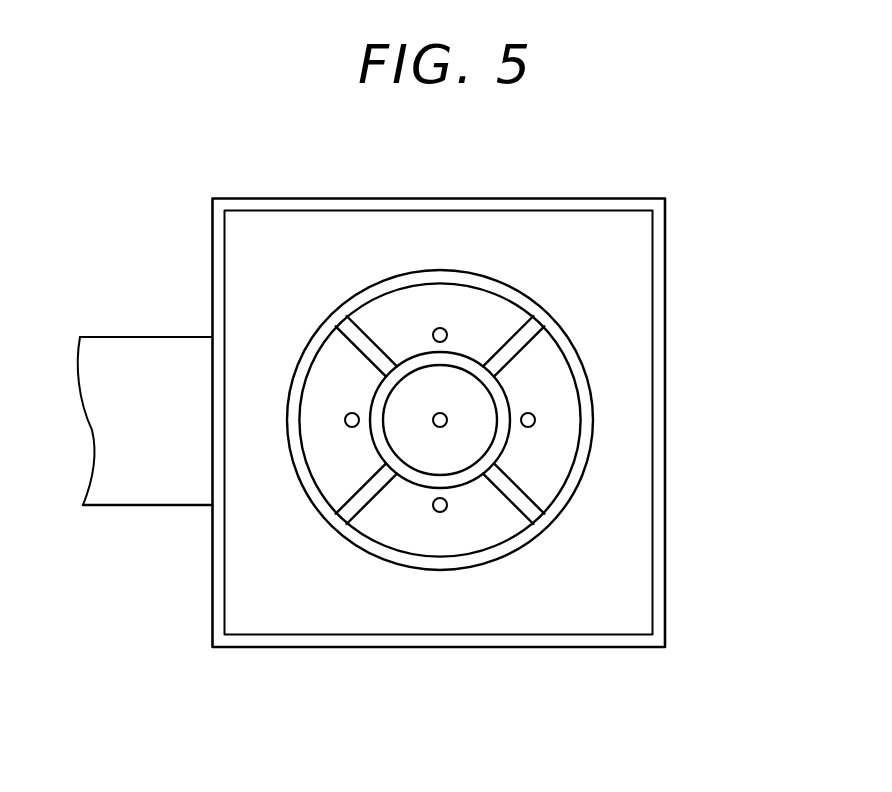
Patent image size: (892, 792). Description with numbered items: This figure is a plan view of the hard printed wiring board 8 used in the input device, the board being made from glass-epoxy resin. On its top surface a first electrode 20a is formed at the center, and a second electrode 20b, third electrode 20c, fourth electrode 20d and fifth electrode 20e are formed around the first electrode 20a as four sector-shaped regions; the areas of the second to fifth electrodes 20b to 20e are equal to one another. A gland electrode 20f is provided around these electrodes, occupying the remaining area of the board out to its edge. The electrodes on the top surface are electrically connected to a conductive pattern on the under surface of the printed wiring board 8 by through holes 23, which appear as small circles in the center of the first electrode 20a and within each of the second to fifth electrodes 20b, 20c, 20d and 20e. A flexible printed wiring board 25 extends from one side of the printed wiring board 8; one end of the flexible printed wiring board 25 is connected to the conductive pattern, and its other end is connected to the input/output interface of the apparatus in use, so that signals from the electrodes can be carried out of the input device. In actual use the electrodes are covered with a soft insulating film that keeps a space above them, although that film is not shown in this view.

The printed wiring board 8 is at (668, 250).
The first electrode 20a is at (423, 460).
The second electrode 20b is at (422, 293).
The third electrode 20c is at (330, 467).
The fourth electrode 20d is at (488, 537).
The fifth electrode 20e is at (565, 410).
The gland electrode 20f is at (633, 517).
The through holes 23 is at (446, 328).
The flexible printed wiring board 25 is at (148, 347).